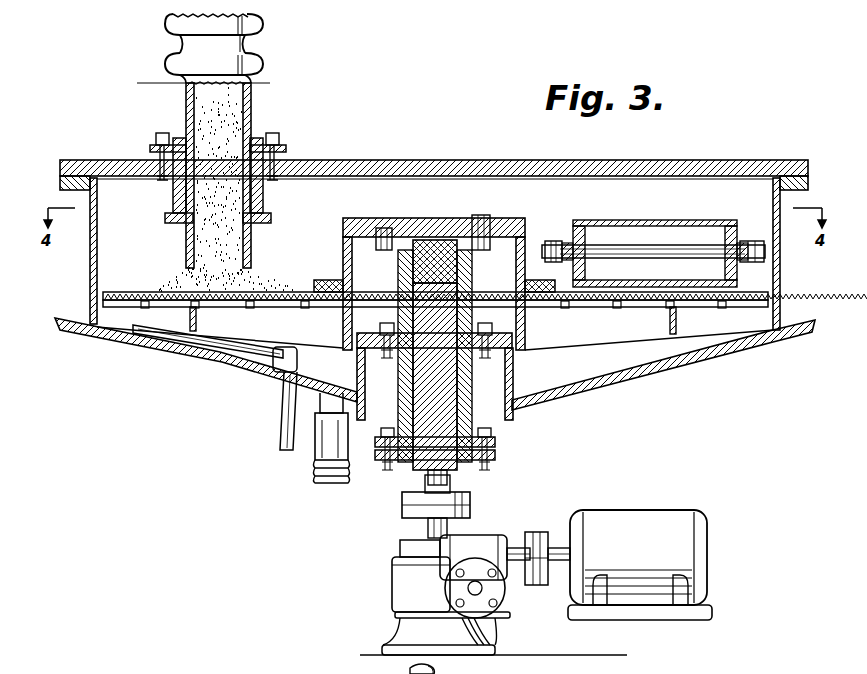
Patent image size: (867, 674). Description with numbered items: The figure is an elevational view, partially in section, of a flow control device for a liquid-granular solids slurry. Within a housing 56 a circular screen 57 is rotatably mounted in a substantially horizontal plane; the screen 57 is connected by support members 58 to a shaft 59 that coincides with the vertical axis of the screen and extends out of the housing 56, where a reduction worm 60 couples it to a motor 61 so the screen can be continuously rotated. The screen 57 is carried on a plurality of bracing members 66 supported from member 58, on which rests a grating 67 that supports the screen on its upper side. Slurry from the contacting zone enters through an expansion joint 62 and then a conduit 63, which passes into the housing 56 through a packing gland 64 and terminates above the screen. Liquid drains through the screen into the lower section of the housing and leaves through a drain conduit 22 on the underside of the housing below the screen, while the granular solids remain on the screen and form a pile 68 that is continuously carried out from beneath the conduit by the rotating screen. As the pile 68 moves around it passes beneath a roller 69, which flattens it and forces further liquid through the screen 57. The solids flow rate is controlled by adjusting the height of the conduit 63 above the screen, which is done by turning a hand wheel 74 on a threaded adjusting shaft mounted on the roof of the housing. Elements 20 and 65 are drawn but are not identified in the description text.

The tank 20 is at (97, 162).
The drain conduit 22 is at (320, 455).
The housing 56 is at (564, 160).
The circular screen 57 is at (153, 283).
The support members 58 is at (407, 228).
The shaft 59 is at (413, 311).
The reduction worm 60 is at (478, 540).
The motor 61 is at (654, 520).
The expansion joint 62 is at (166, 58).
The conduit 63 is at (252, 99).
The packing gland 64 is at (174, 205).
The pipe 65 is at (283, 418).
The bracing members 66 is at (638, 322).
The grating 67 is at (594, 305).
The pile 68 is at (256, 291).
The roller 69 is at (580, 230).
The hand wheel 74 is at (443, 672).